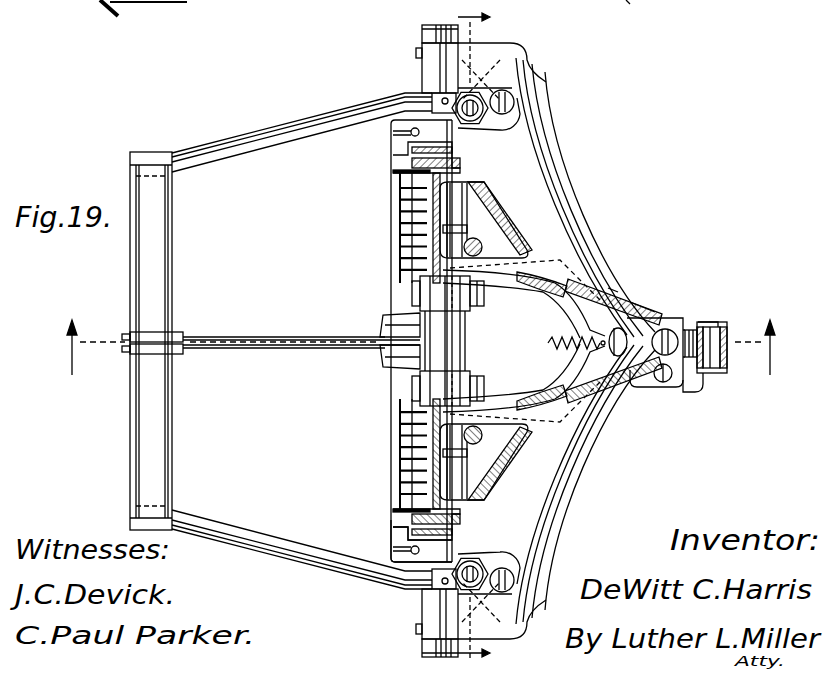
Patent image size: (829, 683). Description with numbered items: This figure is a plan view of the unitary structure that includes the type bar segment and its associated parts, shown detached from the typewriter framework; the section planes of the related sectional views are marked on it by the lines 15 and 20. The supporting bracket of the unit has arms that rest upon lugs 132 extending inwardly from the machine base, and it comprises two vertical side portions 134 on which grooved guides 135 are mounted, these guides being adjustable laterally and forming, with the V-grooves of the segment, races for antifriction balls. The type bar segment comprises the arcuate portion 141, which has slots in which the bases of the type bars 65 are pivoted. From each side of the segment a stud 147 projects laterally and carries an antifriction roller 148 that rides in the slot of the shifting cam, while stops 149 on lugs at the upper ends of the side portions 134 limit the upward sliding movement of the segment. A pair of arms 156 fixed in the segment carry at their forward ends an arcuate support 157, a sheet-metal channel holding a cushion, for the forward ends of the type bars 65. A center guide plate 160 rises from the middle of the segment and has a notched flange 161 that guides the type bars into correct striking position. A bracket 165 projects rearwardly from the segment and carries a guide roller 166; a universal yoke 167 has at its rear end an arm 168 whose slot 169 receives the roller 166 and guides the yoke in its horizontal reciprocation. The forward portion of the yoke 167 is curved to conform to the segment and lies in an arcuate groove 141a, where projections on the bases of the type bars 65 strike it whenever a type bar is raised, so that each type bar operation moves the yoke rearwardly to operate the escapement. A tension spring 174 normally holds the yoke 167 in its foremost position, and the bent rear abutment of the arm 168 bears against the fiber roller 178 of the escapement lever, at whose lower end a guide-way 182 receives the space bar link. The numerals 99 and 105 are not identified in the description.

The section line 15- 15 is at (474, 333).
The section line 20- 20 is at (419, 347).
The type bars 65 is at (247, 335).
The frame member 99 is at (121, 12).
The lower arm 105 is at (560, 387).
The lugs 132 is at (652, 12).
The side portions 134 is at (508, 55).
The grooved guides 135 is at (473, 47).
The arcuate portion 141 is at (437, 128).
The arcuate groove 141a is at (400, 503).
The stud 147 is at (430, 72).
The antifriction roller 148 is at (425, 33).
The stops 149 is at (517, 127).
The arms 156 is at (252, 152).
The arcuate support 157 is at (155, 297).
The center guide plate 160 is at (470, 327).
The notched flange 161 is at (392, 363).
The bracket 165 is at (617, 332).
The guide roller 166 is at (668, 323).
The universal yoke 167 is at (527, 228).
The arm 168 is at (613, 290).
The slot 169 is at (628, 314).
The tension spring 174 is at (548, 345).
The fiber roller 178 is at (722, 332).
The guide-way 182 is at (688, 393).